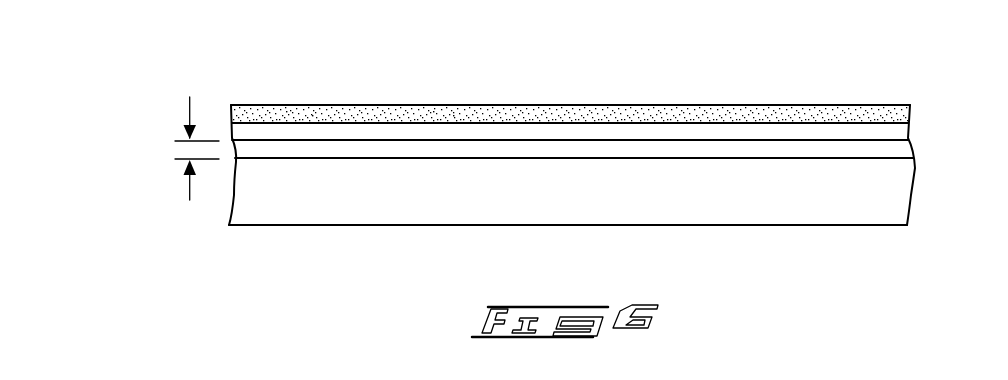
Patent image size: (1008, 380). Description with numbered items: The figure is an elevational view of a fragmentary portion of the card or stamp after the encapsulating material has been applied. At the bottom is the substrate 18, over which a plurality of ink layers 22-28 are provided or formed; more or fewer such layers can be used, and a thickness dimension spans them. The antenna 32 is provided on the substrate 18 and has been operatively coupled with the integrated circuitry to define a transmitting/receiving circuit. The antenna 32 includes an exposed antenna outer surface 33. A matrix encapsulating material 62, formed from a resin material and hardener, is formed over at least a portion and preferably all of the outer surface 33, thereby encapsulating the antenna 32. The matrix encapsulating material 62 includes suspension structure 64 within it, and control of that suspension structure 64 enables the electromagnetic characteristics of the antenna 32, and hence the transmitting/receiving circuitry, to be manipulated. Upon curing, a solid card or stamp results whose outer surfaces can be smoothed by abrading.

The substrate 18 is at (292, 202).
The antenna 32 is at (508, 132).
The antenna outer surface 33 is at (720, 122).
The matrix encapsulating material 62 is at (613, 72).
The suspension structure 64 is at (287, 110).
The ink layers 22-28 is at (190, 109).